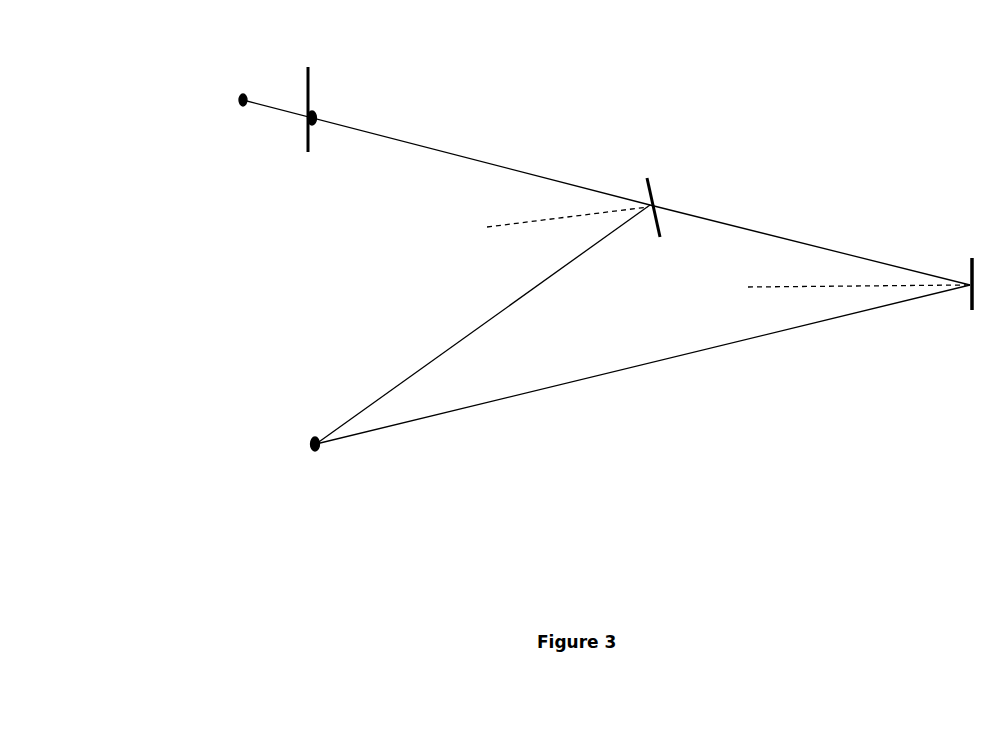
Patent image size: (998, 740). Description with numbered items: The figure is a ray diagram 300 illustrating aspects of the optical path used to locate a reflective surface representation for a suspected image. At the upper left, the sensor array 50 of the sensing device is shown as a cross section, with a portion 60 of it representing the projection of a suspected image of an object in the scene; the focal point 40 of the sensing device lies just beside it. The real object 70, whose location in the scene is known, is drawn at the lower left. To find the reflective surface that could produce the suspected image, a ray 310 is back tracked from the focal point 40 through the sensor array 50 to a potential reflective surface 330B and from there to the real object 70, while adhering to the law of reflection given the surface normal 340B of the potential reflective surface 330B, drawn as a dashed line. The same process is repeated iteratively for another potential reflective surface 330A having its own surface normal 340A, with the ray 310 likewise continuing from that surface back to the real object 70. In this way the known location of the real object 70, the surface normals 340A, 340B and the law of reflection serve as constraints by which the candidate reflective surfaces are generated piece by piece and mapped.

The ray diagram 300 is at (133, 296).
The ray 310 is at (520, 168).
The focal point 40 is at (240, 96).
The sensor array 50 is at (308, 67).
The portion 60 is at (313, 113).
The real object 70 is at (308, 440).
The potential reflective surface 330A is at (968, 262).
The potential reflective surface 330B is at (650, 180).
The surface normal 340A is at (748, 287).
The surface normal 340B is at (487, 227).